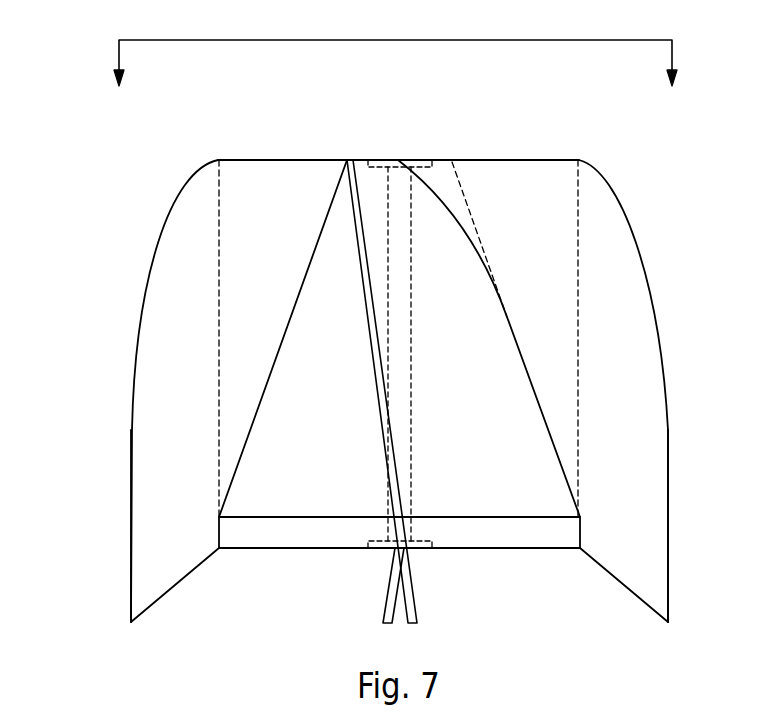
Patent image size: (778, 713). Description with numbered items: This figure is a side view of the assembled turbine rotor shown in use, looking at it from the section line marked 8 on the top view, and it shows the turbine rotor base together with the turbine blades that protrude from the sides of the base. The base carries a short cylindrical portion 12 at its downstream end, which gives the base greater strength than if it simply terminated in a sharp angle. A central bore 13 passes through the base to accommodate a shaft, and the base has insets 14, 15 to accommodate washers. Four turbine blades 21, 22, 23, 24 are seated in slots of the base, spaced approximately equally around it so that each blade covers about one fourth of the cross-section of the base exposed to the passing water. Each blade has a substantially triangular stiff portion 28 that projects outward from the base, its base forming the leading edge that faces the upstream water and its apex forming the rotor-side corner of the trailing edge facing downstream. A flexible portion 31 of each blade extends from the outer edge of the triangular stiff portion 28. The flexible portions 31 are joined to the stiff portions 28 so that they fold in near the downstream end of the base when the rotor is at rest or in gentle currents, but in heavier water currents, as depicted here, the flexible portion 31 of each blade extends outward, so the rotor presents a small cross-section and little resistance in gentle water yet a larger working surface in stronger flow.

The section line 8- 8 is at (395, 47).
The short cylindrical portion 12 is at (392, 397).
The central bore 13 is at (505, 388).
The inset 14 is at (455, 391).
The inset 15 is at (384, 134).
The turbine blade 21 is at (422, 405).
The turbine blade 22 is at (663, 526).
The turbine blade 23 is at (343, 585).
The turbine blade 24 is at (128, 498).
The triangular stiff portion 28 is at (397, 302).
The flexible portion 31 is at (395, 391).